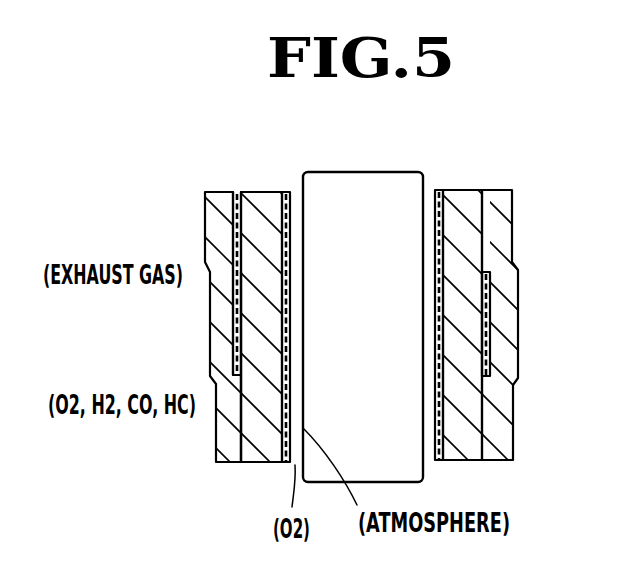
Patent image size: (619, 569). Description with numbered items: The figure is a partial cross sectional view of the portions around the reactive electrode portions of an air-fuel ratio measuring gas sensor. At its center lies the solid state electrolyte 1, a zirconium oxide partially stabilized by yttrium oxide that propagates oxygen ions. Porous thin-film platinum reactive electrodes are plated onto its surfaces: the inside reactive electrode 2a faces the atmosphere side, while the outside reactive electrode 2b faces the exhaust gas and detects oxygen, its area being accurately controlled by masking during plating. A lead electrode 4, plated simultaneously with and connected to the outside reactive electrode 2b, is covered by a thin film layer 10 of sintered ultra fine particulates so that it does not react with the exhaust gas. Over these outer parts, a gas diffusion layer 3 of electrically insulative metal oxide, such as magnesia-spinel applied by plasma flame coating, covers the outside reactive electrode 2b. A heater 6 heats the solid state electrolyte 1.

The solid state electrolyte 1 is at (272, 190).
The inside reactive electrode 2a is at (292, 190).
The outside reactive electrode 2b is at (238, 337).
The gas diffusion layer 3 is at (210, 192).
The lead electrode 4 is at (247, 192).
The heater 6 is at (362, 205).
The thin film layer 10 is at (225, 192).